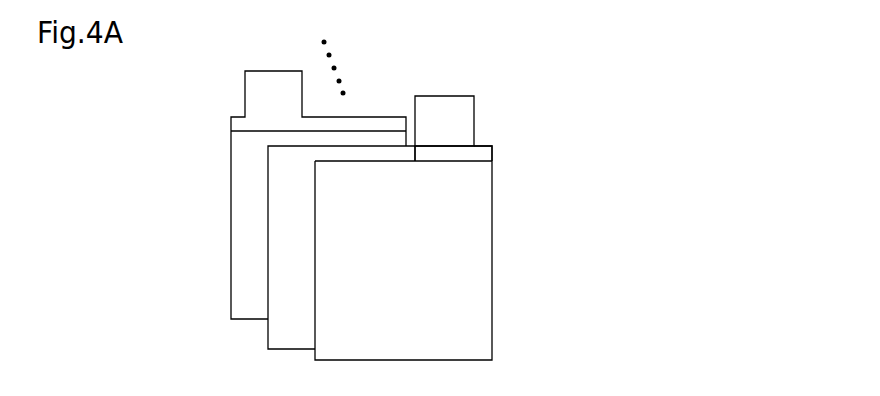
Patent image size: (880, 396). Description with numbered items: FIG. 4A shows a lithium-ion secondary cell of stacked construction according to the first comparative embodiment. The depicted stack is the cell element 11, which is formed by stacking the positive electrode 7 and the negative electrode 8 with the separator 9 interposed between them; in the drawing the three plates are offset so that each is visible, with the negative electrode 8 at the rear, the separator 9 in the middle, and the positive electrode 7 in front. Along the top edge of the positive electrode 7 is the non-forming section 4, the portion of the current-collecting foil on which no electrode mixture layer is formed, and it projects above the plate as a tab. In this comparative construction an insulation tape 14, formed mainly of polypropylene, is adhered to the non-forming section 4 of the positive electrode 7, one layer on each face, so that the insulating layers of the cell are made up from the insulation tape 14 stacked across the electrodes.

The non-forming section 4 is at (455, 125).
The positive electrode 7 is at (475, 266).
The negative electrode 8 is at (242, 200).
The separator 9 is at (285, 255).
The cell element 11 is at (523, 203).
The insulation tape 14 is at (458, 157).